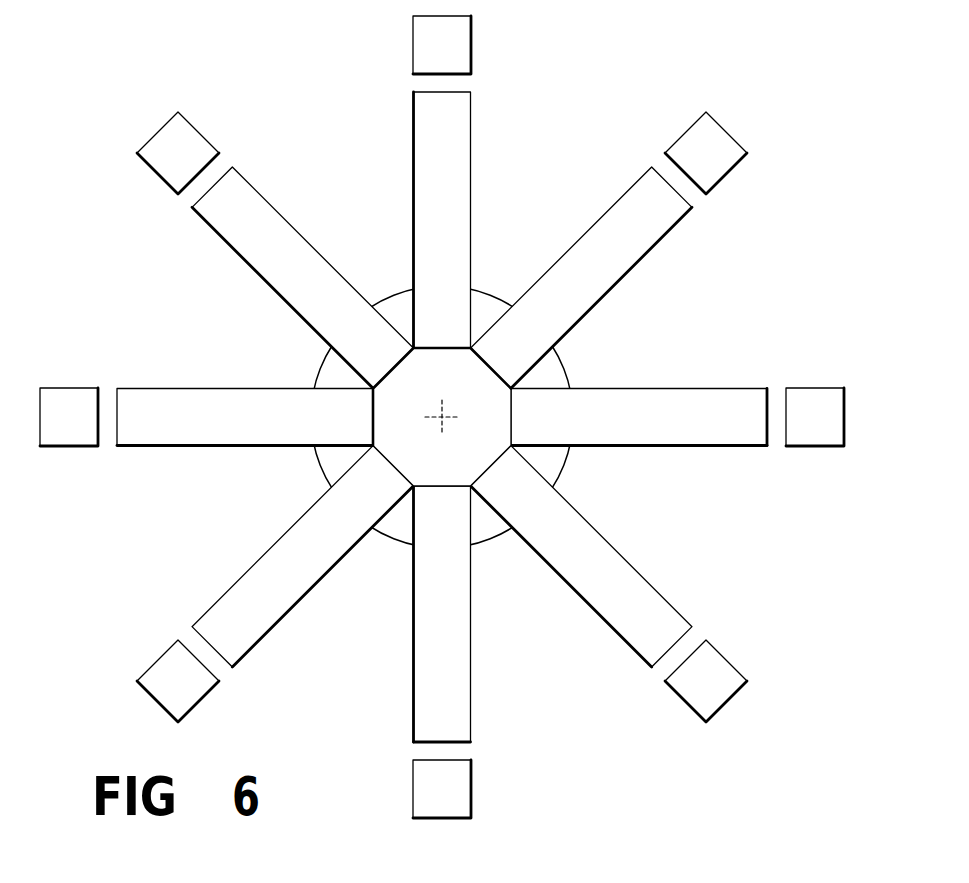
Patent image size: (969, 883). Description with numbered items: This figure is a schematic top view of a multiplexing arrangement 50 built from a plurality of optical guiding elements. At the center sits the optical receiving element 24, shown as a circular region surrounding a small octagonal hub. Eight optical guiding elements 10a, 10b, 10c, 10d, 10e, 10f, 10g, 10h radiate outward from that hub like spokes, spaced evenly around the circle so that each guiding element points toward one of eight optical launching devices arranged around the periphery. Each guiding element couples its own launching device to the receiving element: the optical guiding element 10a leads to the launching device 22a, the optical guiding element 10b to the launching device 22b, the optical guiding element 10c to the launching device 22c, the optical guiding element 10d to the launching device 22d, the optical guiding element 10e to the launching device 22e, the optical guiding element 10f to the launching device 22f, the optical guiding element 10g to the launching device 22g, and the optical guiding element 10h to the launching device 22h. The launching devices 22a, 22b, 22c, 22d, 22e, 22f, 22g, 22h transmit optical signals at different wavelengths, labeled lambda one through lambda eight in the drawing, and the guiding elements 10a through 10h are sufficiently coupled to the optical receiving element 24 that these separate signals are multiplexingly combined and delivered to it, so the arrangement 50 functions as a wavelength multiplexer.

The multiplexing arrangement 50 is at (298, 82).
The optical receiving element 24 is at (399, 290).
The optical guiding element 10a is at (302, 236).
The optical guiding element 10b is at (413, 189).
The optical guiding element 10c is at (588, 231).
The optical guiding element 10d is at (670, 390).
The optical guiding element 10e is at (624, 557).
The optical guiding element 10f is at (413, 647).
The optical guiding element 10g is at (262, 556).
The optical guiding element 10h is at (213, 387).
The optical launching device 22a is at (200, 133).
The optical launching device 22b is at (413, 53).
The optical launching device 22c is at (683, 135).
The optical launching device 22d is at (815, 389).
The optical launching device 22e is at (727, 661).
The optical launching device 22f is at (413, 778).
The optical launching device 22g is at (160, 656).
The optical launching device 22h is at (72, 387).